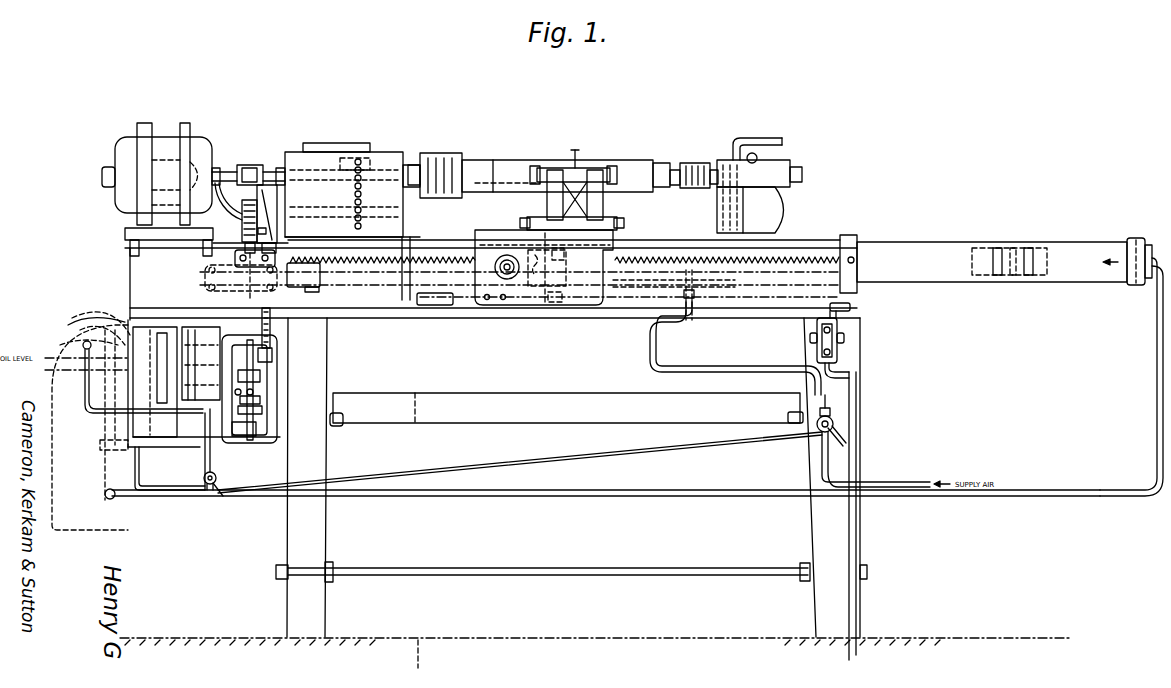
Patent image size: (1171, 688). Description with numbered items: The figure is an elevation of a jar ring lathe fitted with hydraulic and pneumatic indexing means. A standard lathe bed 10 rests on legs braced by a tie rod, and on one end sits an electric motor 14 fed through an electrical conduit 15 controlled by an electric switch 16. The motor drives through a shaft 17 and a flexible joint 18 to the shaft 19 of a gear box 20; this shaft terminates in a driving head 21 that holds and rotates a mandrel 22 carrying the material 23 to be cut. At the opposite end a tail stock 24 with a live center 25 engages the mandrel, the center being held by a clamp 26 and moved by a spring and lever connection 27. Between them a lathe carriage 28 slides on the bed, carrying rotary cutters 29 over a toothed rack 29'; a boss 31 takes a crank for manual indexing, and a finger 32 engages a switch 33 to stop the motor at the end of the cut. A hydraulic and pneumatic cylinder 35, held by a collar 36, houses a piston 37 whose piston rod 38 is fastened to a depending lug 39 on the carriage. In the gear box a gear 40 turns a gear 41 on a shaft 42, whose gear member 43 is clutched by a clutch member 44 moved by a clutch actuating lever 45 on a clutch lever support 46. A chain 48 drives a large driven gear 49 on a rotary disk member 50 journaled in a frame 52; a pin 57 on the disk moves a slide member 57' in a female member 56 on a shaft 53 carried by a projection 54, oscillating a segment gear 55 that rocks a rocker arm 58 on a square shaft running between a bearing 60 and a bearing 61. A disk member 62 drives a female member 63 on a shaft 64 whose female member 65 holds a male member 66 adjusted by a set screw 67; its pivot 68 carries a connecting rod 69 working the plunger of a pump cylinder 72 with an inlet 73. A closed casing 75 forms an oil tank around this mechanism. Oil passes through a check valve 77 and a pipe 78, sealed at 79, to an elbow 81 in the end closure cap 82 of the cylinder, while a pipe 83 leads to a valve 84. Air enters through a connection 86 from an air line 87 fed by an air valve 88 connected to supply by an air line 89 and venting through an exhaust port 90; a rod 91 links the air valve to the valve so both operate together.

The lathe bed 10 is at (140, 281).
The electric motor 14 is at (157, 136).
The electrical conduit 15 is at (233, 206).
The electric switch 16 is at (840, 341).
The shaft 17 is at (230, 168).
The flexible joint 18 is at (250, 165).
The shaft 19 is at (272, 172).
The gear box 20 is at (322, 153).
The driving head 21 is at (445, 160).
The mandrel 22 is at (661, 164).
The material 23 is at (538, 160).
The tail stock 24 is at (766, 212).
The live center 25 is at (697, 190).
The clamp 26 is at (756, 139).
The spring and lever connection 27 is at (760, 159).
The lathe carriage 28 is at (612, 238).
The rotary cutters 29 is at (572, 185).
The toothed rack 29' is at (674, 272).
The boss 31 is at (494, 268).
The finger 32 is at (431, 306).
The switch 33 is at (322, 275).
The hydraulic and pneumatic cylinder 35 is at (880, 256).
The collar 36 is at (862, 246).
The piston 37 is at (1016, 260).
The piston rod 38 is at (978, 255).
The depending lug 39 is at (562, 257).
The gear 40 is at (352, 165).
The gear 41 is at (362, 184).
The shaft 42 is at (408, 237).
The gear member 43 is at (242, 210).
The clutch member 44 is at (247, 225).
The clutch actuating lever 45 is at (278, 196).
The clutch lever support 46 is at (233, 258).
The chain 48 is at (276, 237).
The large driven gear 49 is at (252, 430).
The rotary disk member 50 is at (226, 420).
The frame 52 is at (222, 345).
The shaft 53 is at (268, 355).
The projection 54 is at (268, 342).
The segment gear 55 is at (256, 376).
The female member 56 is at (247, 392).
The pin 57 is at (248, 369).
The slide member 57' is at (277, 411).
The rocker arm 58 is at (270, 323).
The bearing 60 is at (202, 296).
The bearing 61 is at (556, 302).
The disk member 62 is at (160, 383).
The female member 63 is at (120, 330).
The shaft 64 is at (160, 367).
The female member 65 is at (90, 323).
The male member 66 is at (150, 358).
The set screw 67 is at (86, 356).
The pivot 68 is at (46, 370).
The connecting rod 69 is at (120, 440).
The pump cylinder 72 is at (518, 394).
The inlet 73 is at (760, 568).
The closed casing 75 is at (852, 310).
The check valve 77 is at (855, 613).
The pipe 78 is at (586, 498).
The seal 79 is at (107, 503).
The elbow 81 is at (1158, 262).
The end closure cap 82 is at (1133, 243).
The pipe 83 is at (211, 500).
The valve 84 is at (203, 482).
The connection 86 is at (696, 311).
The air line 87 is at (742, 374).
The air valve 88 is at (836, 424).
The air line 89 is at (880, 484).
The exhaust port 90 is at (812, 440).
The rod 91 is at (552, 463).